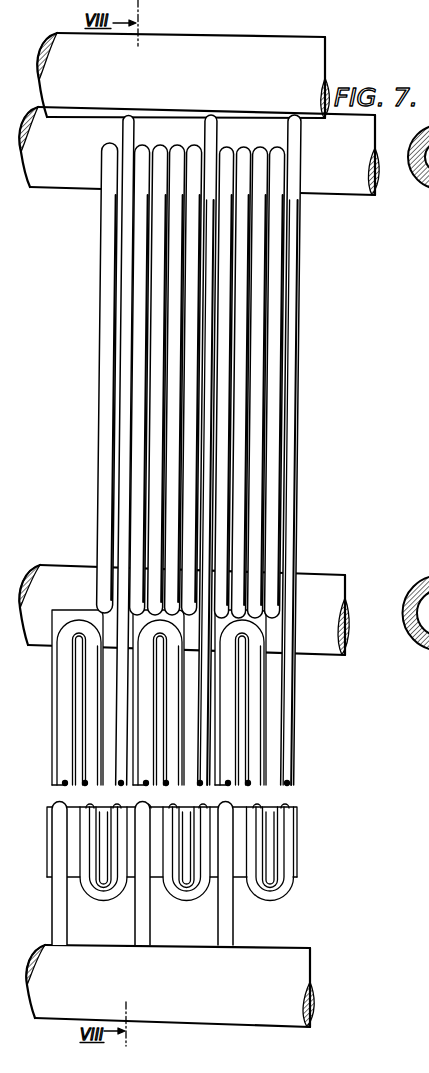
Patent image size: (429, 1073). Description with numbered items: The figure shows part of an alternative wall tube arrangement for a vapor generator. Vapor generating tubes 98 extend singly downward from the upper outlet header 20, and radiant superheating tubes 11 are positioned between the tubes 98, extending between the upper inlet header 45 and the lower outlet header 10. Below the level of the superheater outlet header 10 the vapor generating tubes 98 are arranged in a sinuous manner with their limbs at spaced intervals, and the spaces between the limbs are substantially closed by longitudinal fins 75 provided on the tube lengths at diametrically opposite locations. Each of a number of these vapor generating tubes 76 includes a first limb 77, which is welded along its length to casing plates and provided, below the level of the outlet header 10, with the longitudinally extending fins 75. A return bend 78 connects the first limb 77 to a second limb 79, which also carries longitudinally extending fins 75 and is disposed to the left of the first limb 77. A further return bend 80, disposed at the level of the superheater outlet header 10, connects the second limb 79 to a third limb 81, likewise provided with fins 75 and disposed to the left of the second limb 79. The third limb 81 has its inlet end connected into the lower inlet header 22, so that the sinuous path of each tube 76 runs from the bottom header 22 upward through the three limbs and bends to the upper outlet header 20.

The upper outlet header 20 is at (283, 53).
The vapor generating tubes 98 is at (293, 127).
The upper inlet header 45 is at (373, 196).
The radiant superheating tubes 11 is at (228, 284).
The vapor generating tube 76 is at (210, 348).
The first limb 77 is at (207, 405).
The return bend 80 is at (238, 630).
The lower outlet header 10 is at (322, 588).
The longitudinal fins 75 is at (248, 705).
The second limb 79 is at (177, 768).
The third limb 81 is at (147, 853).
The return bend 78 is at (190, 897).
The lower inlet header 22 is at (295, 963).